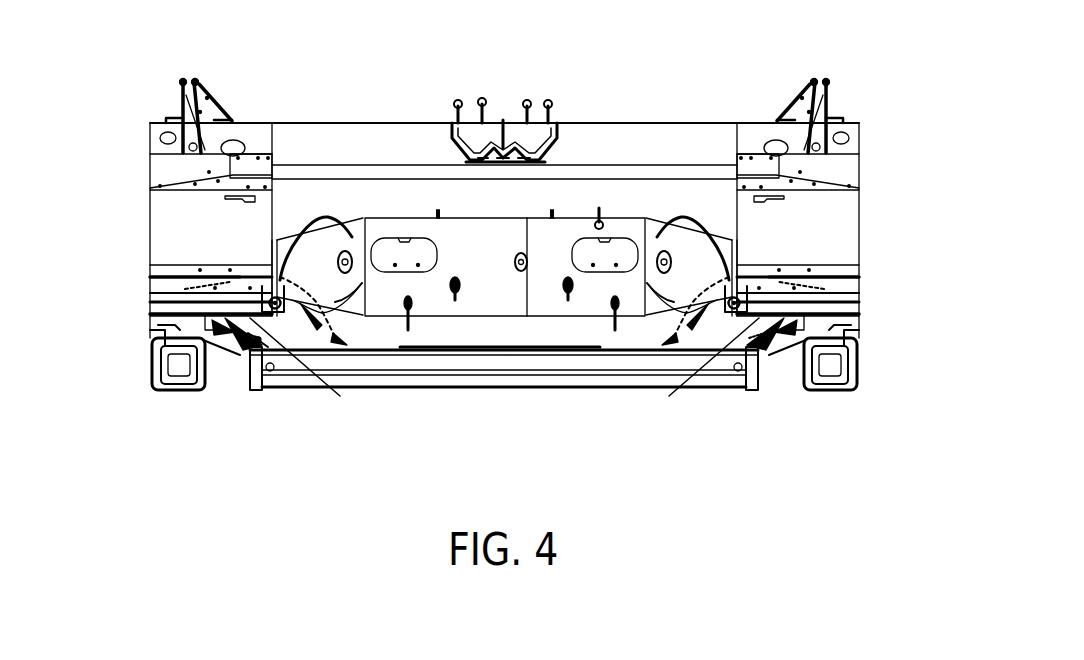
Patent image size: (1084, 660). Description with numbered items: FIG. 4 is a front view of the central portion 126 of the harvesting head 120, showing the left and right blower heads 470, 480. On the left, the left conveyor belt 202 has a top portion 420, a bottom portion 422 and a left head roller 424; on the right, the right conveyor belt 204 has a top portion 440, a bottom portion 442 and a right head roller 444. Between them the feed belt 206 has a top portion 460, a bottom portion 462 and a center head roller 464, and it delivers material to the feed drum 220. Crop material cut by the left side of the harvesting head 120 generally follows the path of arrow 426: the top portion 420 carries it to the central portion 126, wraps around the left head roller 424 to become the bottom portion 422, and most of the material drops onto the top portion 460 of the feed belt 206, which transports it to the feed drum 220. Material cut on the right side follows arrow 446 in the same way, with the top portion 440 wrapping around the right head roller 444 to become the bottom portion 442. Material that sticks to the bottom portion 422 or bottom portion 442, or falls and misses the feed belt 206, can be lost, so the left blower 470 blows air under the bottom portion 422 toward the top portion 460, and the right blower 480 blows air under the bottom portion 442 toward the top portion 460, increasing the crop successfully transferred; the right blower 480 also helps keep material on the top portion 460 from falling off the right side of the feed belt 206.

The harvesting head 120 is at (657, 113).
The central portion 126 is at (494, 410).
The left conveyor belt 202 is at (203, 217).
The right conveyor belt 204 is at (805, 233).
The feed belt 206 is at (510, 183).
The feed drum 220 is at (624, 235).
The top portion of the left conveyor belt 420 is at (150, 300).
The bottom portion of the left conveyor belt 422 is at (150, 314).
The left head roller 424 is at (276, 298).
The arrow 426 is at (242, 277).
The top portion of the right conveyor belt 440 is at (859, 298).
The bottom portion of the right conveyor belt 442 is at (859, 315).
The right head roller 444 is at (735, 298).
The arrow 446 is at (768, 277).
The top portion of the feed belt 460 is at (444, 346).
The bottom portion of the feed belt 462 is at (357, 376).
The center head roller 464 is at (259, 344).
The left blower 470 is at (268, 356).
The right blower 480 is at (722, 355).